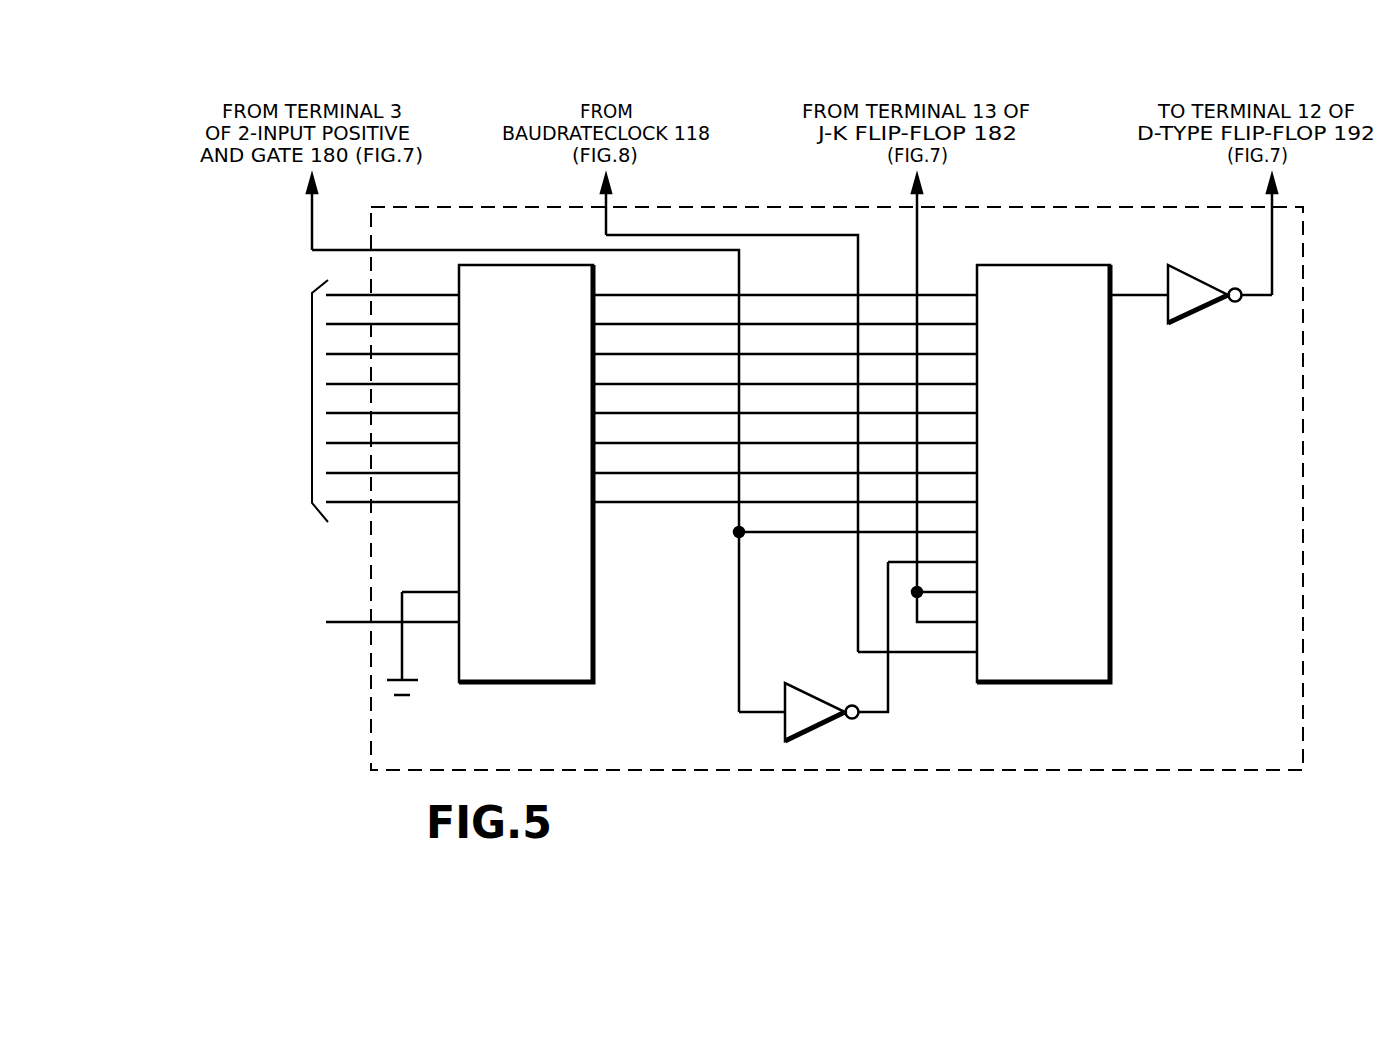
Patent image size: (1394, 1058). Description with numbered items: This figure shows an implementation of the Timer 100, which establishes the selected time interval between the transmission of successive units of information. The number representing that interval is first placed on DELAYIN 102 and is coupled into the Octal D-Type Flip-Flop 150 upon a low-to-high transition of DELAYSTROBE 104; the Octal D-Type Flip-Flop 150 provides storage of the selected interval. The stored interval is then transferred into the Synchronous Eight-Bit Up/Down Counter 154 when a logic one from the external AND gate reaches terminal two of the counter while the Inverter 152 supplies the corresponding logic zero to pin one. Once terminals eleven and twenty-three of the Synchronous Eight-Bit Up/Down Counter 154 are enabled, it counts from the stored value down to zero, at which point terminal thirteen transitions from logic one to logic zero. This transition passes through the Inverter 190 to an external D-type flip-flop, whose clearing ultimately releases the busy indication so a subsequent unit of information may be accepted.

The Timer 100 is at (1022, 772).
The DELAYIN 102 is at (253, 385).
The DELAYSTROBE 104 is at (280, 613).
The Octal D-Type Flip-Flop 150 is at (593, 603).
The Inverter 152 is at (825, 693).
The Synchronous 8-Bit Up/Down Counter 154 is at (1052, 683).
The Inverter 190 is at (1187, 320).